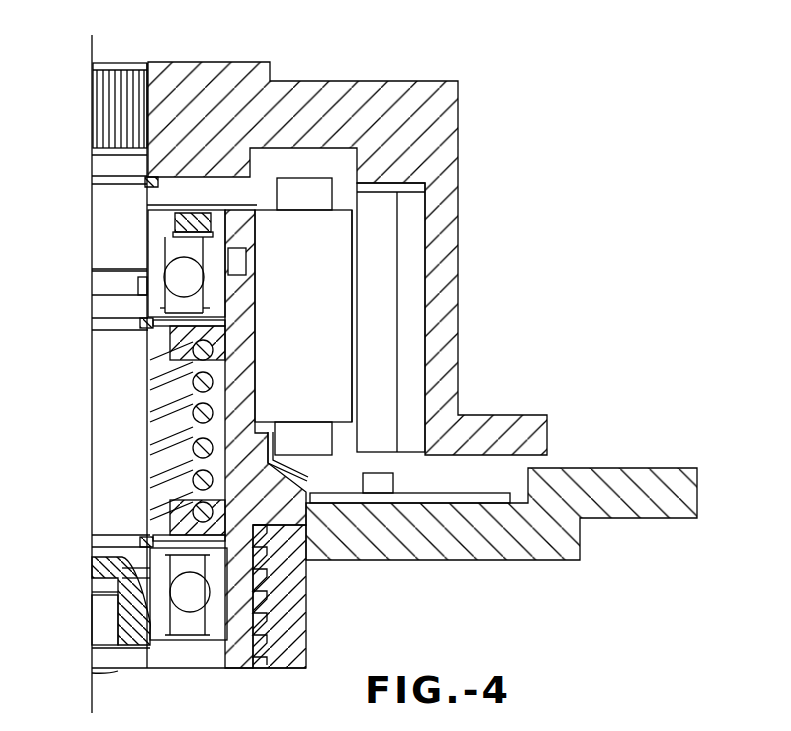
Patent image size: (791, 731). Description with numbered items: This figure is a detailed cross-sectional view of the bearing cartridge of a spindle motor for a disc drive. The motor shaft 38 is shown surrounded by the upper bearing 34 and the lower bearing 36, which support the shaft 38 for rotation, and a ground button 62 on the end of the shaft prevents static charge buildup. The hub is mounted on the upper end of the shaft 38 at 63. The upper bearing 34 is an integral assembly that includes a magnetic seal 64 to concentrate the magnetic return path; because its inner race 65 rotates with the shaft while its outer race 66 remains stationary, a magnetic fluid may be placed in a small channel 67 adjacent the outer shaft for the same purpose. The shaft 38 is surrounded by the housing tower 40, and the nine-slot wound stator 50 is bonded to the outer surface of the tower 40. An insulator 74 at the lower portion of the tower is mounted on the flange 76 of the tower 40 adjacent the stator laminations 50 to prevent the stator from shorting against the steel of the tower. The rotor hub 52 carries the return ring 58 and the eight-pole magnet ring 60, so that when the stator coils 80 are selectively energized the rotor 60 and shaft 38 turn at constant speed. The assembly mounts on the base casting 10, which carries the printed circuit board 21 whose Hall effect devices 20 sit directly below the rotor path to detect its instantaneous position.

The base casting 10 is at (562, 562).
The Hall effect devices 20 is at (385, 487).
The printed circuit board 21 is at (495, 500).
The upper bearing 34 is at (170, 277).
The lower bearing 36 is at (183, 590).
The motor shaft 38 is at (100, 412).
The housing tower 40 is at (250, 327).
The stator 50 is at (338, 348).
The rotor hub 52 is at (456, 124).
The return ring 58 is at (413, 240).
The magnet ring 60 is at (388, 412).
The ground button 62 is at (118, 675).
The hub mounting location 63 is at (136, 72).
The magnetic seal 64 is at (188, 216).
The inner race 65 is at (150, 232).
The outer race 66 is at (217, 288).
The channel 67 is at (218, 208).
The insulator 74 is at (300, 469).
The flange 76 is at (288, 497).
The stator coils 80 is at (332, 283).